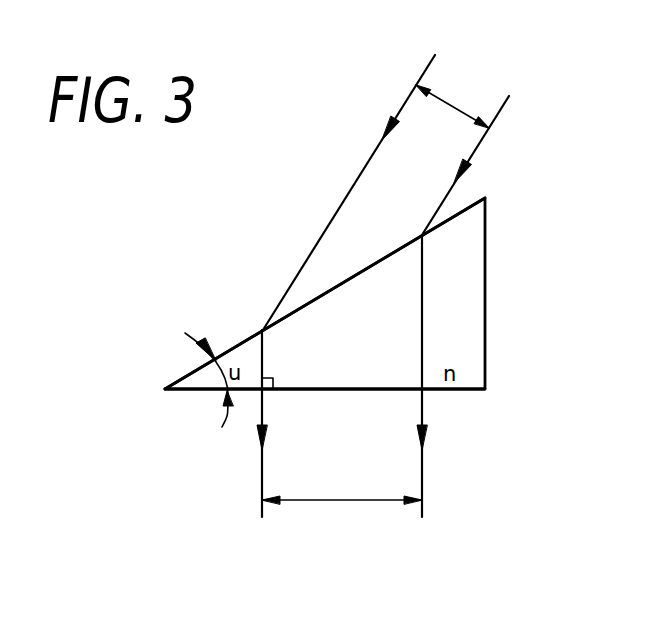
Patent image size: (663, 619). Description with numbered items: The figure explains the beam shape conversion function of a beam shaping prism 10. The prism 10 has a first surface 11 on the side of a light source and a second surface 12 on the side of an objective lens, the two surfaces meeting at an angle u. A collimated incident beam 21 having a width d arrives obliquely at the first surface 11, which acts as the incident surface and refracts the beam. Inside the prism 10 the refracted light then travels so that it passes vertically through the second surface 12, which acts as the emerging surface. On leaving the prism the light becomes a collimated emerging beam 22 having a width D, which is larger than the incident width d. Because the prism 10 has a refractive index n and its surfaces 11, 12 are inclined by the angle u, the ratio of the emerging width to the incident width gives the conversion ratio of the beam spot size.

The beam shaping prism 10 is at (470, 290).
The first surface 11 is at (473, 200).
The second surface 12 is at (453, 392).
The collimated incident beam 21 is at (397, 174).
The collimated emerging beam 22 is at (428, 525).